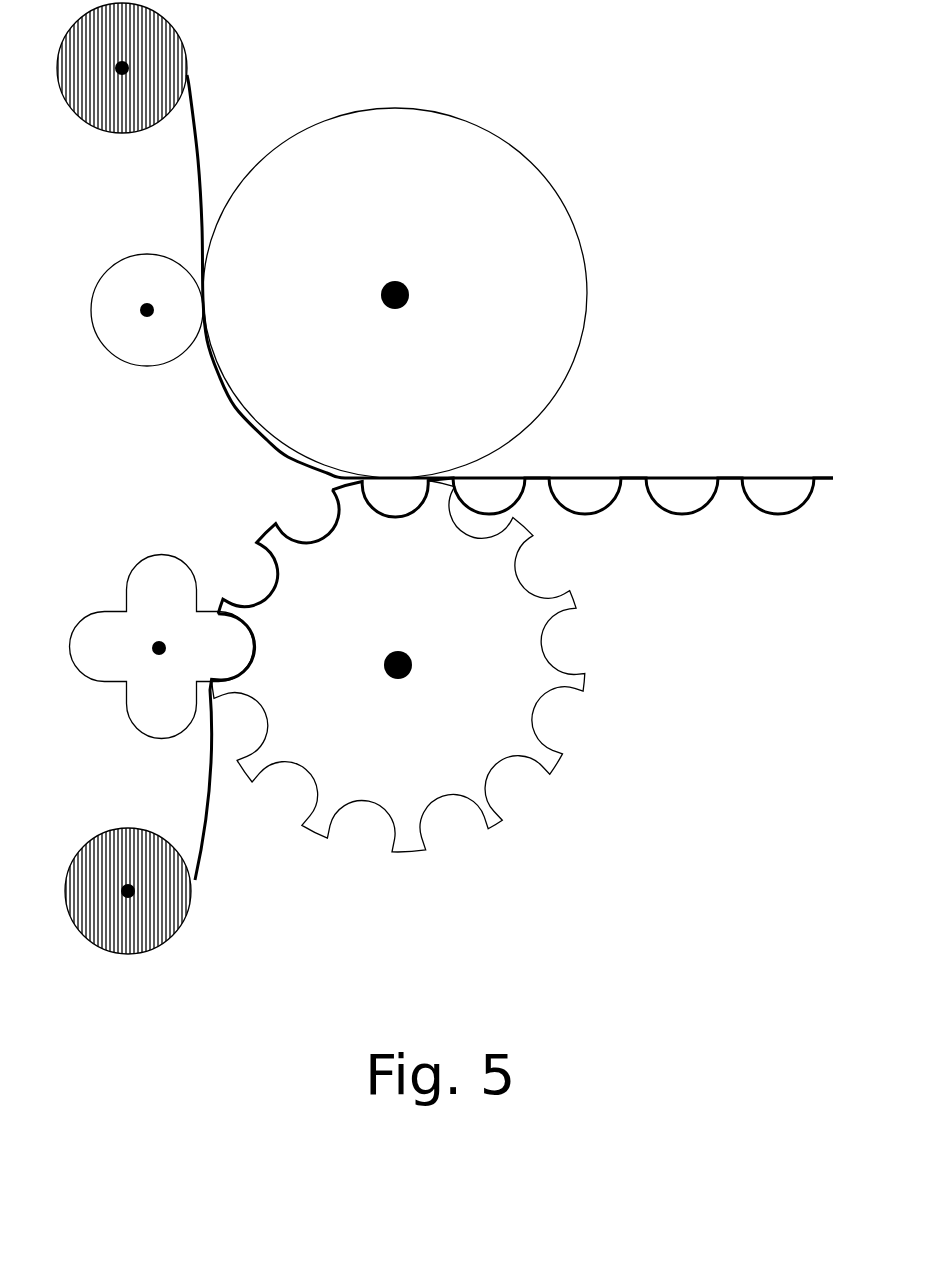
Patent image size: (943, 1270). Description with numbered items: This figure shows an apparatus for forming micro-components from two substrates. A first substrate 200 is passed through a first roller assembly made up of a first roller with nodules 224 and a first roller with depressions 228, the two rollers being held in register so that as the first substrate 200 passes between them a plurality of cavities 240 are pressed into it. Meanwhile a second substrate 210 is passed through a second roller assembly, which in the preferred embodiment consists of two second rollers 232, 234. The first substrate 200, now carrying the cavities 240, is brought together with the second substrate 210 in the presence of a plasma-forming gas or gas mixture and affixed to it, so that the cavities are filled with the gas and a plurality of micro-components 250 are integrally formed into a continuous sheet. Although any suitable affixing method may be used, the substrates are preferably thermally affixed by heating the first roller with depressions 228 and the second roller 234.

The first substrate 200 is at (207, 837).
The second substrate 210 is at (197, 107).
The first roller with nodules 224 is at (137, 562).
The first roller with depressions 228 is at (545, 647).
The second roller 232 is at (128, 357).
The second roller 234 is at (570, 222).
The cavities 240 is at (263, 588).
The micro-components 250 is at (490, 490).